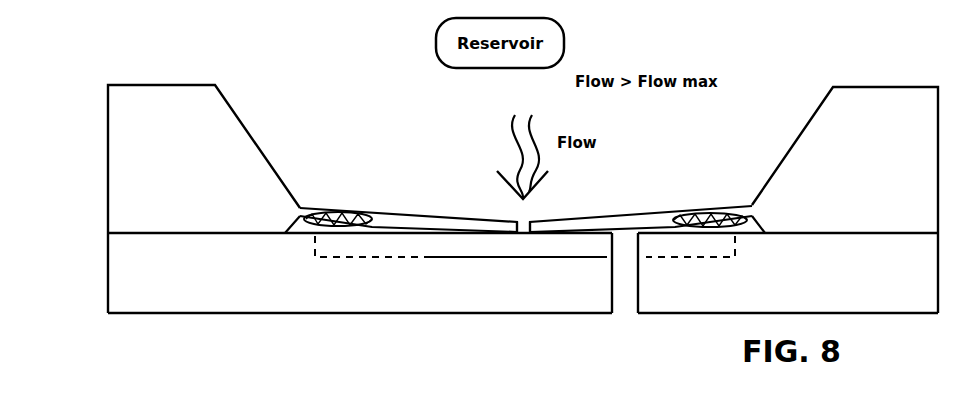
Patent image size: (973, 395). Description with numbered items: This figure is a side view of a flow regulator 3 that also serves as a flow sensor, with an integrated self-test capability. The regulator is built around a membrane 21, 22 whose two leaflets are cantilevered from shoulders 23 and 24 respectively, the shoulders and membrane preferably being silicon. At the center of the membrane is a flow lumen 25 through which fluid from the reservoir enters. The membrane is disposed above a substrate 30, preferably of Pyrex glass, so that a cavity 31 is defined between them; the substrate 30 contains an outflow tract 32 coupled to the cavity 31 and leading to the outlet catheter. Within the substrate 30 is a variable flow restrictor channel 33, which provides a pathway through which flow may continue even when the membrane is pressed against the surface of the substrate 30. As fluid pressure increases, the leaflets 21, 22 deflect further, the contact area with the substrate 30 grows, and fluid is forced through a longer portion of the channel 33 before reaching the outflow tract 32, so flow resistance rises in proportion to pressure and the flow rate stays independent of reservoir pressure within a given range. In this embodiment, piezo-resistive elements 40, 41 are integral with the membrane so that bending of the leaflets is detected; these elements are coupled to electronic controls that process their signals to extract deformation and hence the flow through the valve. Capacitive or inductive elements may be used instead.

The flow regulator 3 is at (50, 140).
The membrane 21 is at (391, 212).
The membrane 22 is at (645, 212).
The shoulder 23 is at (207, 113).
The shoulder 24 is at (877, 107).
The flow lumen 25 is at (525, 222).
The substrate 30 is at (272, 293).
The cavity 31 is at (392, 230).
The outflow tract 32 is at (620, 314).
The variable flow restrictor channel 33 is at (498, 247).
The piezo-resistive element 40 is at (338, 213).
The piezo-resistive element 41 is at (700, 212).